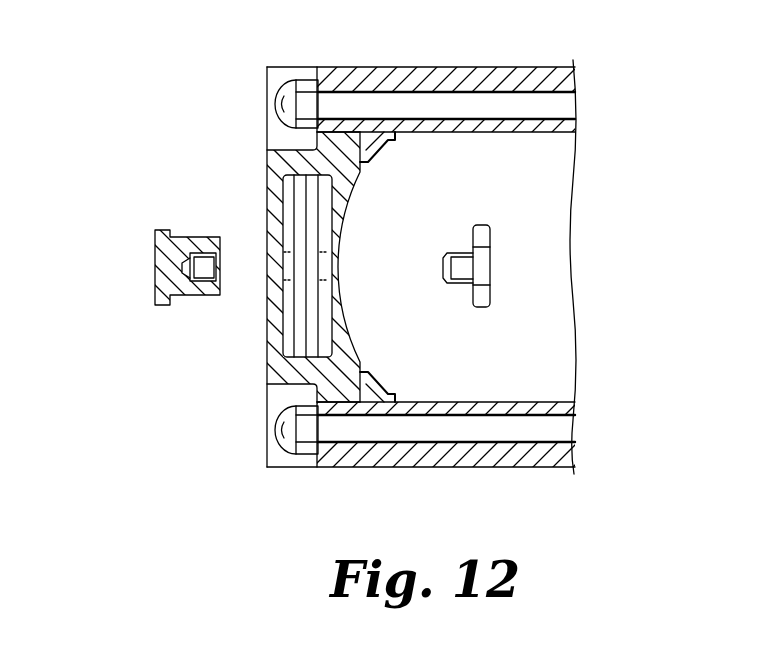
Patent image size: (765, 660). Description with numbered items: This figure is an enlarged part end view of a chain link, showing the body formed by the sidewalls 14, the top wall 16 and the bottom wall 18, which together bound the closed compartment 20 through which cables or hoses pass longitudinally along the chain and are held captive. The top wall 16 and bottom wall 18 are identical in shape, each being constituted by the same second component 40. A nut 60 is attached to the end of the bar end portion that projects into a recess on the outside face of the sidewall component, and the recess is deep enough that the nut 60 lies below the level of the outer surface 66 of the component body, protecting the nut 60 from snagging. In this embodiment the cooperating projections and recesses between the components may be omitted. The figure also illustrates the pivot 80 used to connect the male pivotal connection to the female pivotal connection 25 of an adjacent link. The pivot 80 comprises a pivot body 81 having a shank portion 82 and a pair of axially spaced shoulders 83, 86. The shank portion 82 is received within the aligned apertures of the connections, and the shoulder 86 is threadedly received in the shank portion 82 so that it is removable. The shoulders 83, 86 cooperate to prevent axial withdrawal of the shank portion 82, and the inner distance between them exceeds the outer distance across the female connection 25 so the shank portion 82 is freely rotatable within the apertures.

The sidewalls 14 is at (258, 382).
The top wall 16 is at (513, 60).
The bottom wall 18 is at (504, 476).
The compartment 20 is at (537, 184).
The female pivotal connection 25 is at (260, 194).
The second component 40 is at (414, 88).
The nut 60 is at (306, 82).
The outer surface 66 is at (267, 157).
The pivot 80 is at (306, 263).
The pivot body 81 is at (180, 219).
The shank portion 82 is at (202, 287).
The shoulder 83 is at (163, 233).
The shoulder 86 is at (484, 233).